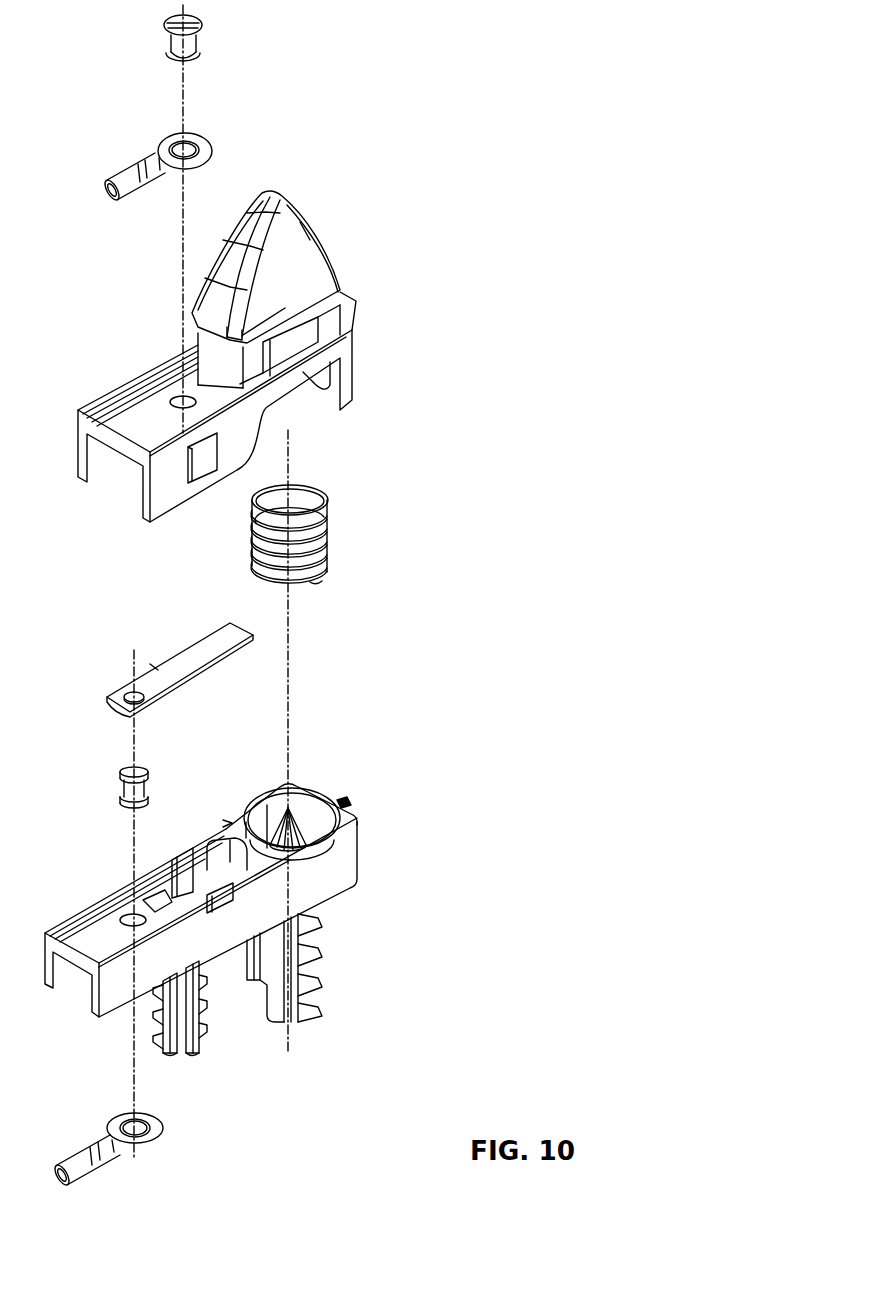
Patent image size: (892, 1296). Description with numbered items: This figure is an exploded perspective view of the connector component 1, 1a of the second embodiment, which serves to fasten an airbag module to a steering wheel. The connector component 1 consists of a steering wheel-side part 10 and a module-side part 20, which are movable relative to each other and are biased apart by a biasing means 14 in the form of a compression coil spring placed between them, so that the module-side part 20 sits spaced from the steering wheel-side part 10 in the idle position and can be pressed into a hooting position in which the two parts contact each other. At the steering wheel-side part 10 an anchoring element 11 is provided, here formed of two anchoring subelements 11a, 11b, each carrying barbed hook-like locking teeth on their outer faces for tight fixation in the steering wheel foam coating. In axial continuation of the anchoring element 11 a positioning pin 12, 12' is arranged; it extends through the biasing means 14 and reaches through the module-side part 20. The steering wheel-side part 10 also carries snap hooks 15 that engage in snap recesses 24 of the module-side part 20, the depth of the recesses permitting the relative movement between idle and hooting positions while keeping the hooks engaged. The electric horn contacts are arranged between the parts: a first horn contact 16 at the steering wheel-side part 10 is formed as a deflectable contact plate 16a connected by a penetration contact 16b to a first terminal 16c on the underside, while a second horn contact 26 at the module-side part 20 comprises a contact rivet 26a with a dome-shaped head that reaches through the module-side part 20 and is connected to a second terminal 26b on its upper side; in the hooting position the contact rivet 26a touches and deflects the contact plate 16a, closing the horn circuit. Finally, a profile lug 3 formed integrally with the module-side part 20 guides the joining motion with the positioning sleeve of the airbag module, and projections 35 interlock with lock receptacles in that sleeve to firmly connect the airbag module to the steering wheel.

The connector component 1 is at (608, 153).
The plug-in contact arrangement variant 1a is at (543, 188).
The profile lug 3 is at (322, 175).
The steering wheel-side part 10 is at (254, 886).
The anchoring element 11 is at (302, 999).
The anchoring subelement 11a is at (323, 970).
The anchoring subelement 11b is at (207, 1043).
The positioning pin 12 is at (322, 769).
The centering cone 12' is at (322, 769).
The biasing means 14 is at (342, 509).
The snap hooks 15 is at (343, 800).
The first horn contact 16 is at (180, 703).
The contact plate 16a is at (163, 667).
The penetration contact 16b is at (113, 777).
The first terminal 16c is at (97, 1190).
The module-side part 20 is at (251, 407).
The snap recesses 24 is at (202, 462).
The second horn contact 26 is at (262, 38).
The contact rivet 26a is at (203, 36).
The second terminal 26b is at (108, 162).
The projections 35 is at (337, 286).